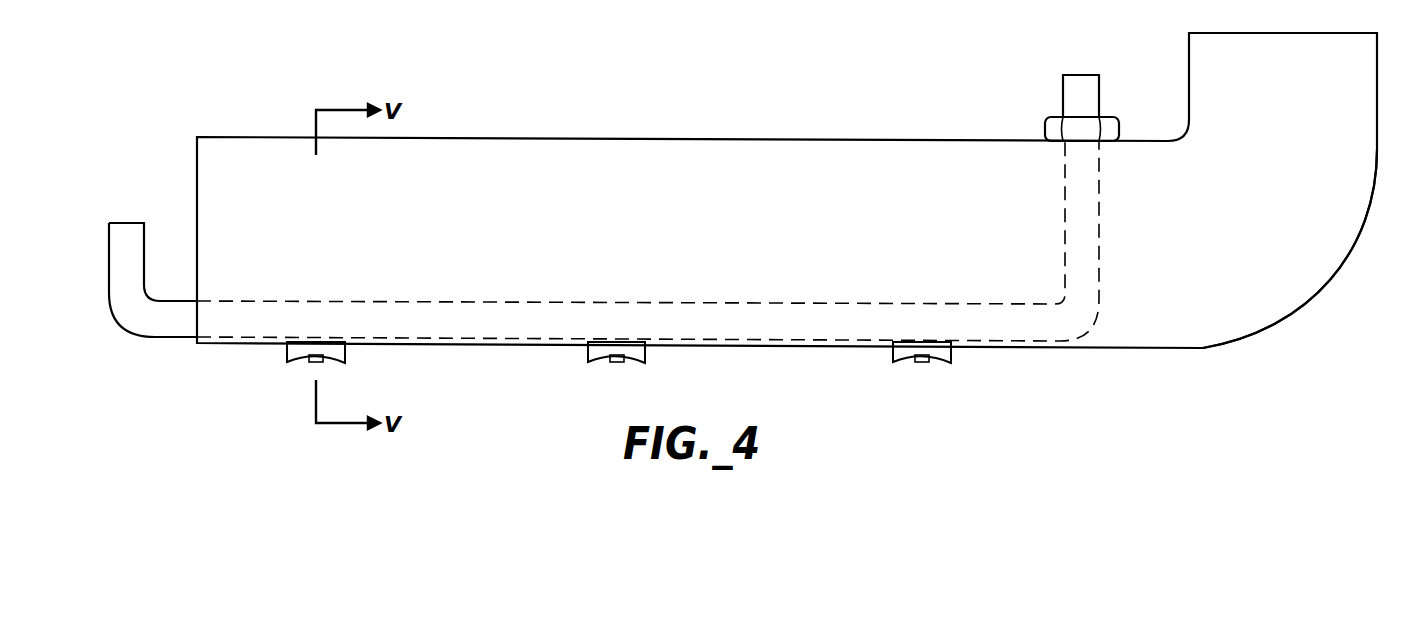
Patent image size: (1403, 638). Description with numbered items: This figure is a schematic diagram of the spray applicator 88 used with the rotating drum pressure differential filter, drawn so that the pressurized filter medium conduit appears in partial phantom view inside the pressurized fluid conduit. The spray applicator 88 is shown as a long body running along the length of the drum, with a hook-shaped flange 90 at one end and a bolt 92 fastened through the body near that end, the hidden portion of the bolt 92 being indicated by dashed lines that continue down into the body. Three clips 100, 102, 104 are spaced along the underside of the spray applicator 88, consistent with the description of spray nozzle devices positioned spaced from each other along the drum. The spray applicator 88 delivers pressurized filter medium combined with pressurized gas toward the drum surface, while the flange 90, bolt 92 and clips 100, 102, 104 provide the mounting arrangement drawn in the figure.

The spray applicator 88 is at (822, 128).
The hook flange 90 is at (1230, 346).
The bolt 92 is at (1075, 105).
The clip 100 is at (905, 363).
The clip 102 is at (640, 362).
The clip 104 is at (287, 350).